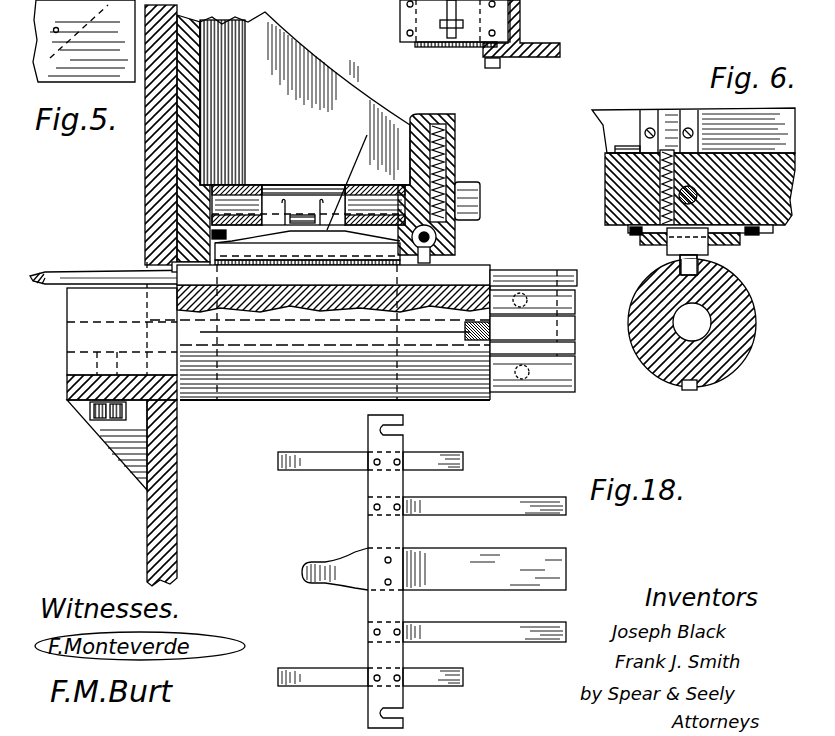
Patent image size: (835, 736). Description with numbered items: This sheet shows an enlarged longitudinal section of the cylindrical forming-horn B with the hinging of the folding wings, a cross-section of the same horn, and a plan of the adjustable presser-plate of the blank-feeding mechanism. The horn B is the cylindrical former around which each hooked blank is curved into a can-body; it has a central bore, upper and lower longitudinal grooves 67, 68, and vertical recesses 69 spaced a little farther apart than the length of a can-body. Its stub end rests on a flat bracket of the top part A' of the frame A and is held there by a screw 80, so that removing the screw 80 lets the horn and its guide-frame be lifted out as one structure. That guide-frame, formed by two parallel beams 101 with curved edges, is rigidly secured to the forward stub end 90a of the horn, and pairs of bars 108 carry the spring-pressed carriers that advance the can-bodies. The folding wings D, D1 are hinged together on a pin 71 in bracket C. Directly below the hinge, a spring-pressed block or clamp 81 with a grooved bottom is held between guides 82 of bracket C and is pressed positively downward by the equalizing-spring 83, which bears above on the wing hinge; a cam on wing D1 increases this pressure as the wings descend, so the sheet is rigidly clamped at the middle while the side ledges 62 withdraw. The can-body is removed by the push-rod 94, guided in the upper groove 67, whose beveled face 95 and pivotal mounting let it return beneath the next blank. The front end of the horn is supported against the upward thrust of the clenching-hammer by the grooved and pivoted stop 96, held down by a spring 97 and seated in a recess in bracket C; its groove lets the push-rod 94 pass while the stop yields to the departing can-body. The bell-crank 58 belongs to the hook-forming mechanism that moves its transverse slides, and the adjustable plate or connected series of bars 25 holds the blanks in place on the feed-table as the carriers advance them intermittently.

In FIG. 18, the adjustable plate 25 is at (422, 571).
In FIG. 5, the bell-crank 58 is at (447, 15).
In FIG. 5, the sliding ledges 62 is at (606, 3).
In FIG. 5, the upper longitudinal groove 67 is at (463, 277).
In FIG. 6, the upper longitudinal groove 67 is at (700, 271).
In FIG. 6, the lower longitudinal groove 68 is at (692, 393).
In FIG. 5, the vertical recesses 69 is at (212, 393).
In FIG. 5, the pin 71 is at (481, 196).
In FIG. 6, the pin 71 is at (697, 196).
In FIG. 5, the screw 80 is at (98, 413).
In FIG. 5, the spring-pressed block or clamp 81 is at (306, 247).
In FIG. 5, the guides 82 is at (456, 166).
In FIG. 5, the equalizing-spring 83 is at (356, 175).
In FIG. 5, the forward stub end 90a is at (551, 302).
In FIG. 5, the push-rod 94 is at (80, 263).
In FIG. 5, the beveled face 95 is at (207, 268).
In FIG. 5, the grooved and pivoted stop 96 is at (452, 240).
In FIG. 6, the grooved and pivoted stop 96 is at (668, 246).
In FIG. 5, the spring 97 is at (447, 130).
In FIG. 6, the spring 97 is at (696, 152).
In FIG. 5, the parallel beams 101 is at (533, 279).
In FIG. 5, the bars 108 is at (568, 341).
In FIG. 5, the frame A is at (308, 246).
In FIG. 5, the top part of frame A' is at (178, 493).
In FIG. 5, the forming-horn B is at (320, 342).
In FIG. 6, the forming-horn B is at (757, 333).
In FIG. 5, the bracket C is at (305, 98).
In FIG. 6, the bracket C is at (607, 174).
In FIG. 5, the folding wing D is at (240, 185).
In FIG. 5, the folding wing D1 is at (298, 188).